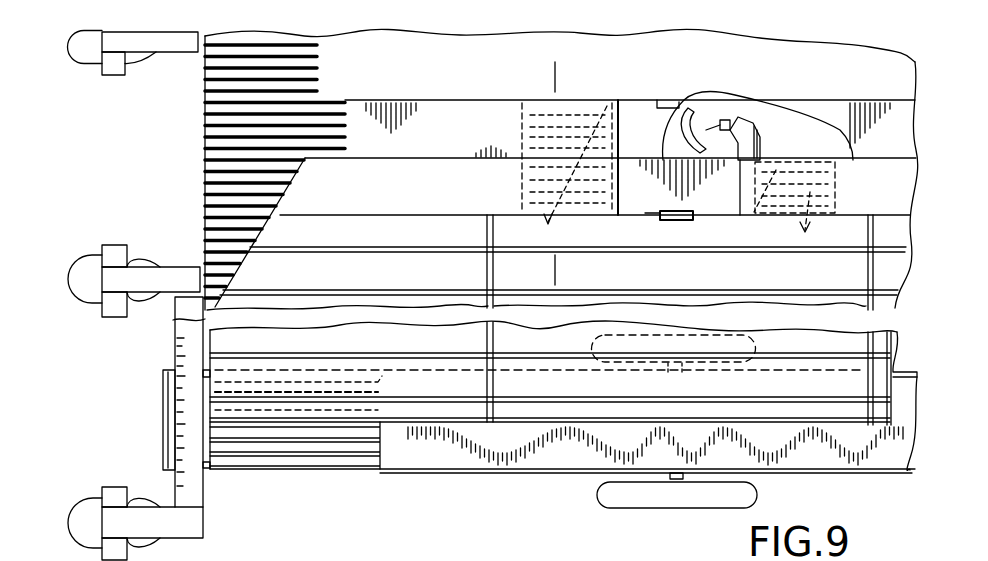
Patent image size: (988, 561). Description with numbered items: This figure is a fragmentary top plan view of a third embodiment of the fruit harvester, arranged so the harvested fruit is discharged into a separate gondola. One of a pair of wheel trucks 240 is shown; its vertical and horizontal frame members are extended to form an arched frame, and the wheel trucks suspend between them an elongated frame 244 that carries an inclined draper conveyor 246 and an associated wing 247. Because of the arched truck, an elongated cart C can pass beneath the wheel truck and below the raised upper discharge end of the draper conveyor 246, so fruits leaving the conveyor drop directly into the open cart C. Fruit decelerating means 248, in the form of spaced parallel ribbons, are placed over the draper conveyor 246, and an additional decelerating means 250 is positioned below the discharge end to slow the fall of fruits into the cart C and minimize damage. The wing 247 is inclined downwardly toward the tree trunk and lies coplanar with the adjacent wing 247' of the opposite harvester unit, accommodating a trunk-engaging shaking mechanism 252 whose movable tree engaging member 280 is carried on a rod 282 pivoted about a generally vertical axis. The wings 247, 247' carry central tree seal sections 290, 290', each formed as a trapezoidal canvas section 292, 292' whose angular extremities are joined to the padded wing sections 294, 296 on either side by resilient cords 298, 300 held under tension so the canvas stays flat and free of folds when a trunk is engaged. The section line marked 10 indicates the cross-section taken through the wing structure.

The section line 10 is at (552, 75).
The wheel truck 240 is at (118, 253).
The elongated frame 244 is at (175, 352).
The inclined draper conveyor 246 is at (420, 282).
The wing 247 is at (595, 187).
The wing 247' is at (610, 129).
The fruit decelerating means 248 is at (302, 193).
The additional decelerating means 250 is at (298, 472).
The trunk-engaging shaking mechanism 252 is at (765, 146).
The movable tree engaging member 280 is at (684, 107).
The rod 282 is at (748, 125).
The central tree seal section 290 is at (637, 247).
The central tree seal section 290' is at (662, 76).
The trapezoidal section 292 is at (711, 204).
The trapezoidal section 292' is at (572, 137).
The padded wing section 294 is at (480, 203).
The padded wing section 296 is at (858, 200).
The resilient cord 298 is at (568, 176).
The resilient cord 300 is at (806, 204).
The cart C is at (450, 476).